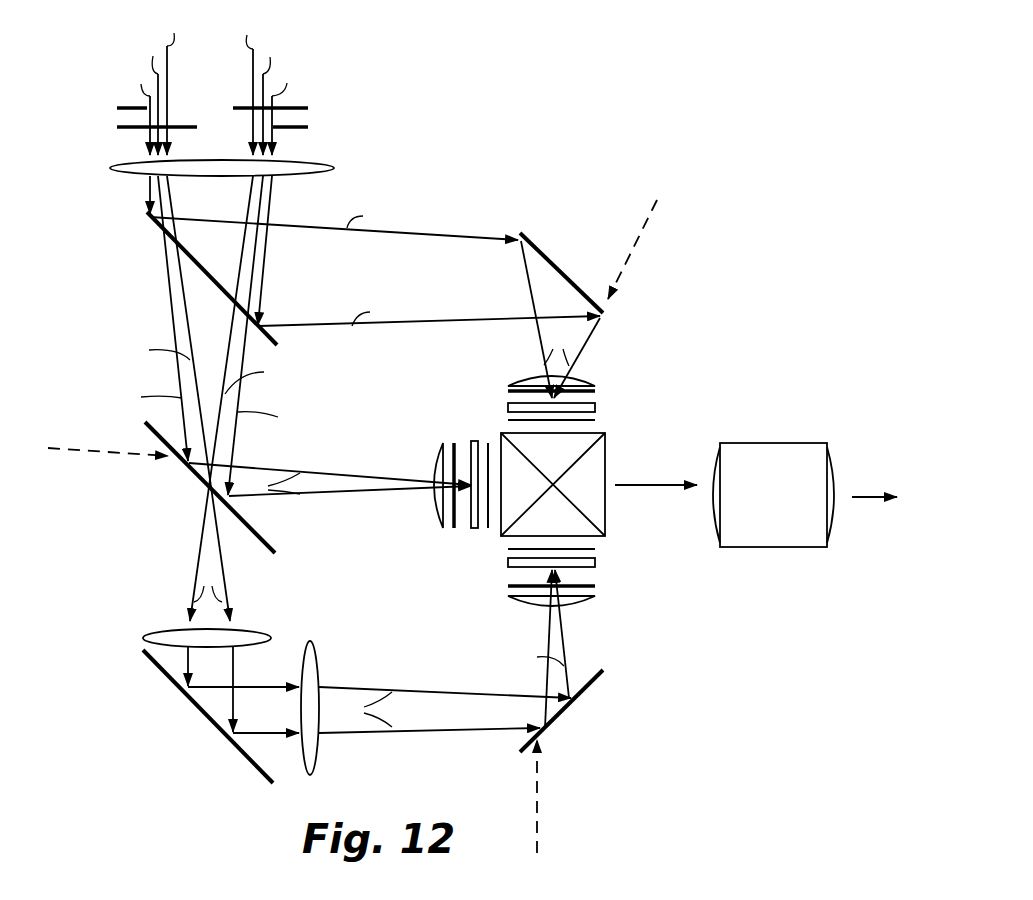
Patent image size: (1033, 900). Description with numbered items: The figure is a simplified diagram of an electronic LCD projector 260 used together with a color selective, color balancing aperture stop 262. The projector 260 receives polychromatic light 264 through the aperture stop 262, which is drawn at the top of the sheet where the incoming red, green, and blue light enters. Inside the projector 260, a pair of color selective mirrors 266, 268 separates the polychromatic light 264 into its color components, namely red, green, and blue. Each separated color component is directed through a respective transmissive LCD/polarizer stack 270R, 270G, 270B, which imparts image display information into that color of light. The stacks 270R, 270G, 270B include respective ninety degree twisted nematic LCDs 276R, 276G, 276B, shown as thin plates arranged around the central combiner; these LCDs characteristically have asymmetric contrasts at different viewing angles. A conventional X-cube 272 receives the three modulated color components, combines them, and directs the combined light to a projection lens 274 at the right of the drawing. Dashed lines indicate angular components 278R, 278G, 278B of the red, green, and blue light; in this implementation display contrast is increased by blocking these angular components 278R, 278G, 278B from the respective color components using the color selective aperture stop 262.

The electronic projector 260 is at (528, 186).
The color selective, color balancing aperture stop 262 is at (325, 135).
The polychromatic light 264 is at (300, 15).
The color selective mirror 266 is at (163, 232).
The color selective mirror 268 is at (195, 490).
The transmissive LCD/polarizer stack 270B is at (500, 398).
The transmissive LCD/polarizer stack 270G is at (470, 431).
The transmissive LCD/polarizer stack 270R is at (499, 568).
The X-cube 272 is at (606, 504).
The projection lens 274 is at (767, 548).
The 90 degree twisted nematic LCD 276B is at (598, 407).
The 90 degree twisted nematic LCD 276G is at (474, 530).
The 90 degree twisted nematic LCD 276R is at (597, 564).
The angular component 278B is at (625, 262).
The angular component 278G is at (118, 455).
The angular component 278R is at (538, 800).